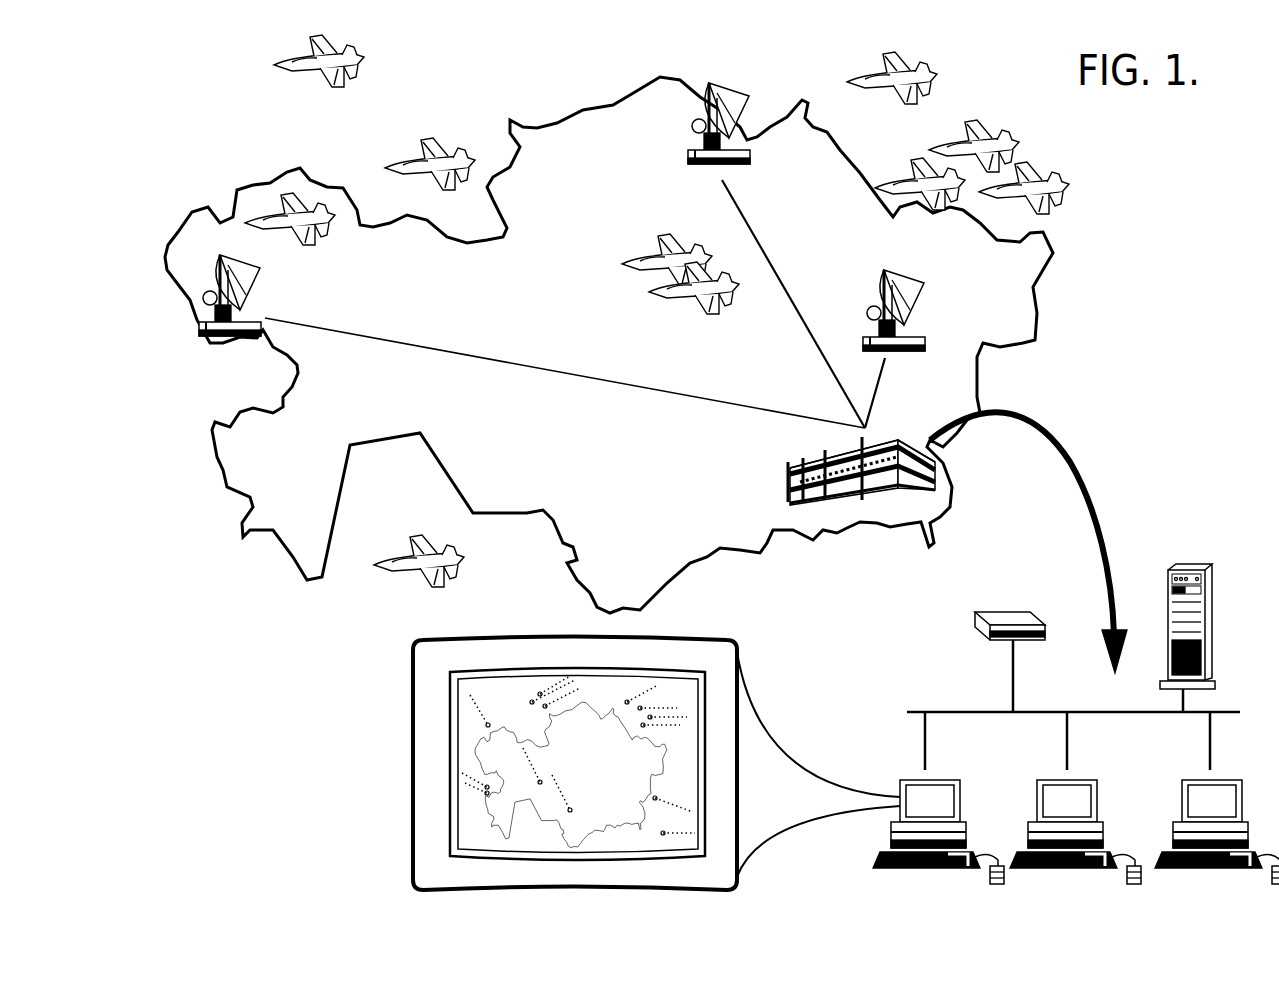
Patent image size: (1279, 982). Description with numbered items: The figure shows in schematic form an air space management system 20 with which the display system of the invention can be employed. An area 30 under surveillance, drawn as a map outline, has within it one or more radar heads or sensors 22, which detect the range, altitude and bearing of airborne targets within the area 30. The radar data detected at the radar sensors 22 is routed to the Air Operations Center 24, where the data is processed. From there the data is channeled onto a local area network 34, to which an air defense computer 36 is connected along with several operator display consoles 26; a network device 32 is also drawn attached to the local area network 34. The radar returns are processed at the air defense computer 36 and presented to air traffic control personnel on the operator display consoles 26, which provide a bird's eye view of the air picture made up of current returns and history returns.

The air space management system 20 is at (997, 390).
The radar heads or sensors 22 is at (212, 262).
The Air Operations Center 24 is at (933, 463).
The operator display consoles 26 is at (938, 780).
The area under surveillance 30 is at (496, 493).
The network hub 32 is at (993, 608).
The local area network (LAN) 34 is at (977, 711).
The air defense computer 36 is at (1192, 562).